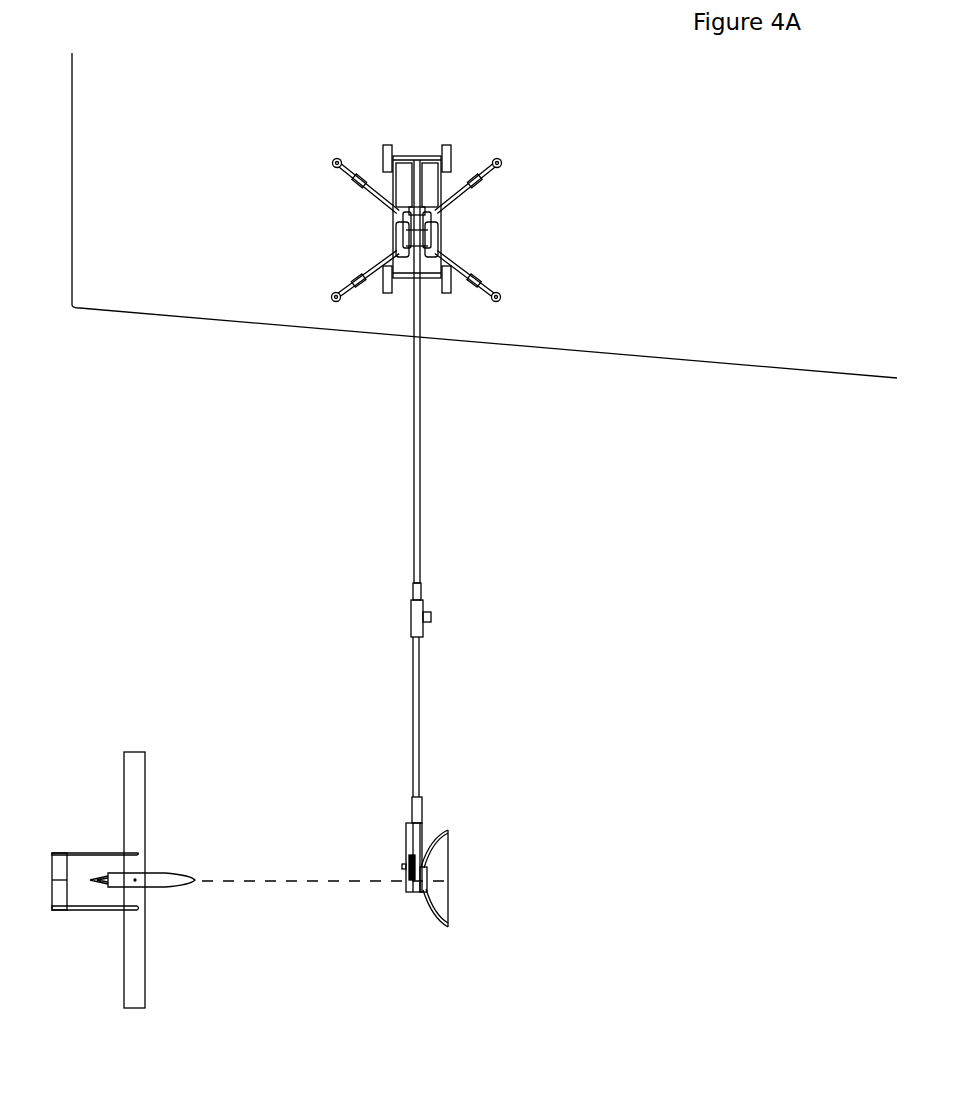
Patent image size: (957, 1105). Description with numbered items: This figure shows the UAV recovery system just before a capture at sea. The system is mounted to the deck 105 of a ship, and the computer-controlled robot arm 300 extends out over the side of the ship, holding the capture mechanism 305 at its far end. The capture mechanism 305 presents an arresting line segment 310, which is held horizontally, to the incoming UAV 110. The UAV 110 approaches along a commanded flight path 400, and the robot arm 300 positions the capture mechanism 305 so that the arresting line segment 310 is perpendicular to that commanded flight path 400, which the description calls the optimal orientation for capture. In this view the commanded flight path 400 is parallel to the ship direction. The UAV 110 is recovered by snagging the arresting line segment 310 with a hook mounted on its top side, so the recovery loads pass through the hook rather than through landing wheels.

The deck 105 is at (127, 290).
The UAV 110 is at (177, 857).
The robot arm 300 is at (410, 491).
The capture mechanism 305 is at (398, 846).
The arresting line segment 310 is at (458, 871).
The commanded flight path 400 is at (343, 884).